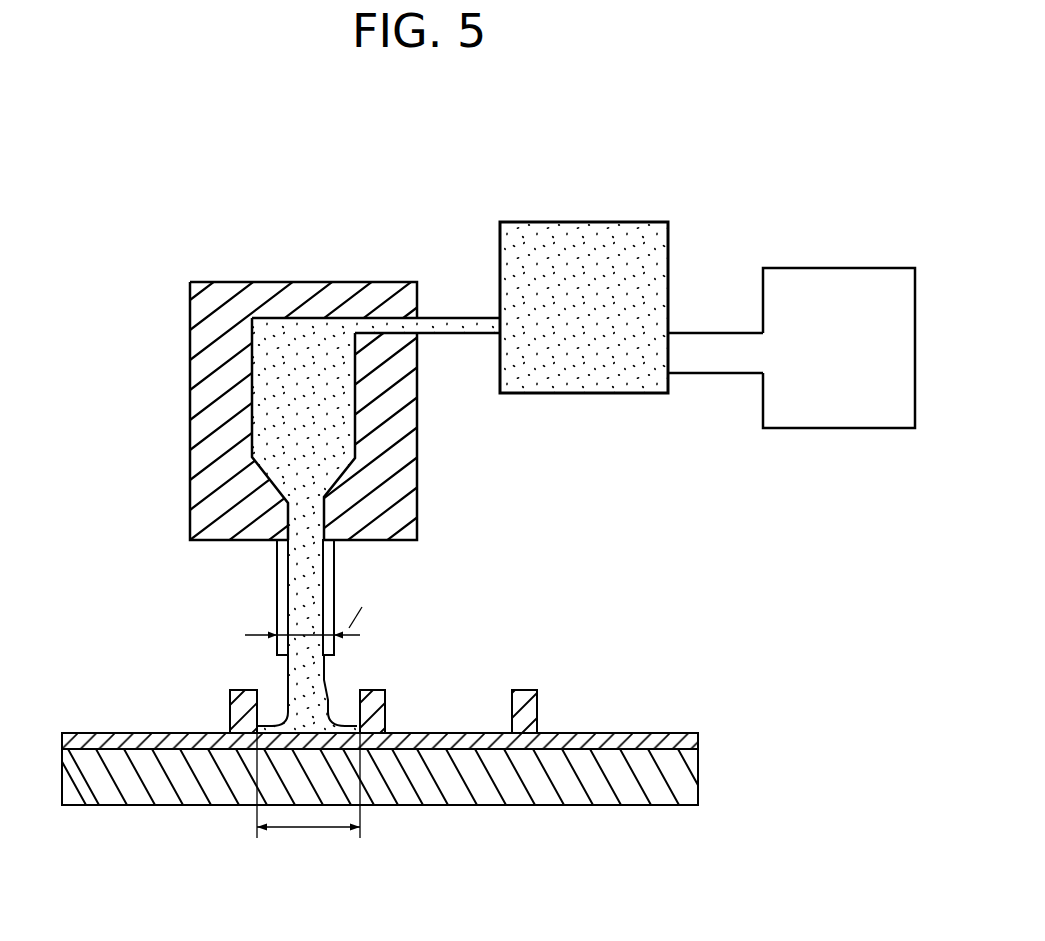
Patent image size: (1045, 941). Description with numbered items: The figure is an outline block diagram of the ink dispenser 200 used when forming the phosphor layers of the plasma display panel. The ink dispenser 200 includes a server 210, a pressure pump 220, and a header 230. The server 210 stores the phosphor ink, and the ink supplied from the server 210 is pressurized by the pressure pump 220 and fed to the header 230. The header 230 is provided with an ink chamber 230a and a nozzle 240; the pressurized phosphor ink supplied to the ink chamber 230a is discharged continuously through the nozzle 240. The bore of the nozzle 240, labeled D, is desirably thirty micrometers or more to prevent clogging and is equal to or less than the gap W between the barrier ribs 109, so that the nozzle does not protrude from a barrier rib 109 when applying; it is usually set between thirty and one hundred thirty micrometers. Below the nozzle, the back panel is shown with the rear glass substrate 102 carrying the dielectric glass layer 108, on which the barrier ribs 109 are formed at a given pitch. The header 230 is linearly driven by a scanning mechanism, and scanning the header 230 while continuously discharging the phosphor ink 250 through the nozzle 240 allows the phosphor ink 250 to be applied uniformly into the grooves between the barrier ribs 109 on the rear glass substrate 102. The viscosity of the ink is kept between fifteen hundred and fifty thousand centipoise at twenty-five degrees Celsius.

The ink dispenser 200 is at (418, 257).
The server 210 is at (842, 428).
The pressure pump 220 is at (593, 393).
The header 230 is at (418, 510).
The ink chamber 230a is at (263, 398).
The nozzle 240 is at (277, 607).
The phosphor ink 250 is at (328, 690).
The barrier rib 109 is at (232, 691).
The dielectric glass layer 108 is at (699, 741).
The rear glass substrate 102 is at (694, 773).